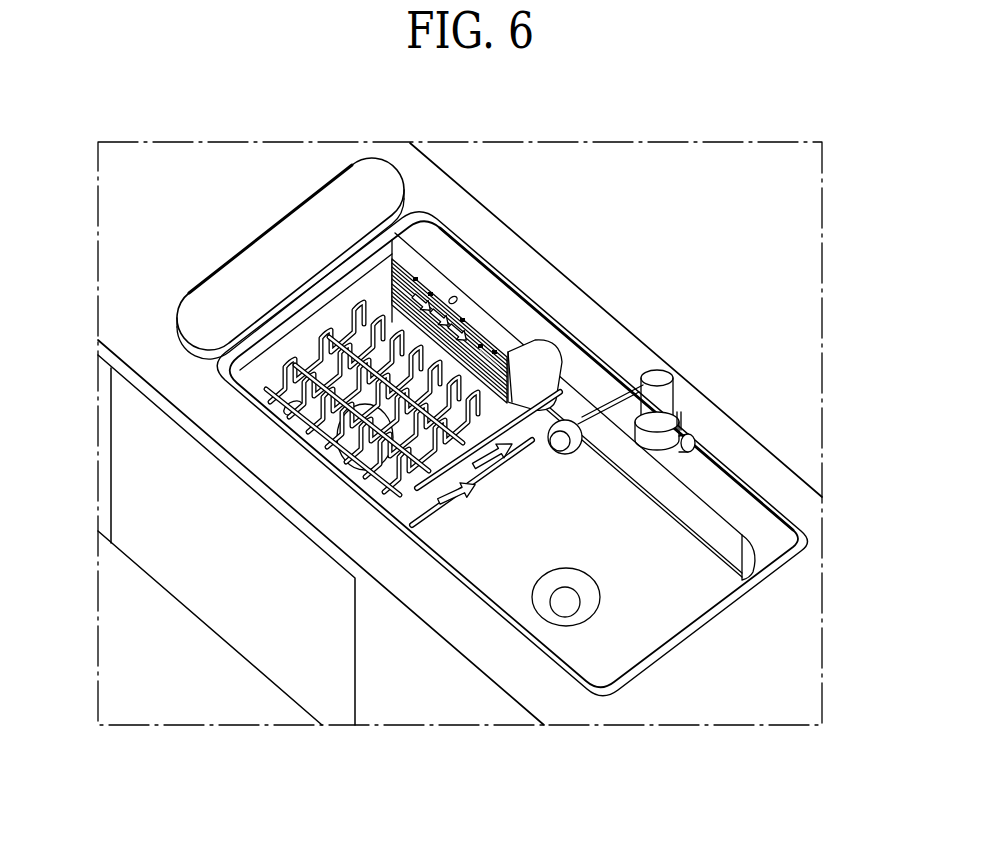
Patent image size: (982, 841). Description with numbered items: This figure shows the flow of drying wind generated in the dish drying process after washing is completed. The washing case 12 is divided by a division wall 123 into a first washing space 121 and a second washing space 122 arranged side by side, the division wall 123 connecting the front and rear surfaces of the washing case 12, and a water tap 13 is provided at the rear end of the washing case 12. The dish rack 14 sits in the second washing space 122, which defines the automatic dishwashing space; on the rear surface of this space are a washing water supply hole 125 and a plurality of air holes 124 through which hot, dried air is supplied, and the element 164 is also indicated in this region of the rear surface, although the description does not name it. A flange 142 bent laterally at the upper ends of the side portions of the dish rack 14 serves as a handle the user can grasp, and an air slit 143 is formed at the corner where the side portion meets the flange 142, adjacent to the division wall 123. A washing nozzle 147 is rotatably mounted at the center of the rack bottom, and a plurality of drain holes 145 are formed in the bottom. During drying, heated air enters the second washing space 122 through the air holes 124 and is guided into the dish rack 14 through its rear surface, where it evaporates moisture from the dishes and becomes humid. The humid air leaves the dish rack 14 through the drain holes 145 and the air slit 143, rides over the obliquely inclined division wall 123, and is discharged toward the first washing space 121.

The washing case 12 is at (709, 372).
The water tap 13 is at (590, 470).
The dish rack 14 is at (404, 220).
The first washing space 121 is at (598, 636).
The second washing space 122 is at (435, 292).
The division wall 123 is at (462, 465).
The air holes 124 is at (470, 340).
The washing water supply hole 125 is at (458, 297).
The flange 142 is at (535, 372).
The air slit 143 is at (465, 462).
The drain holes 145 is at (347, 330).
The washing nozzle 147 is at (335, 372).
The guide 164 is at (497, 362).